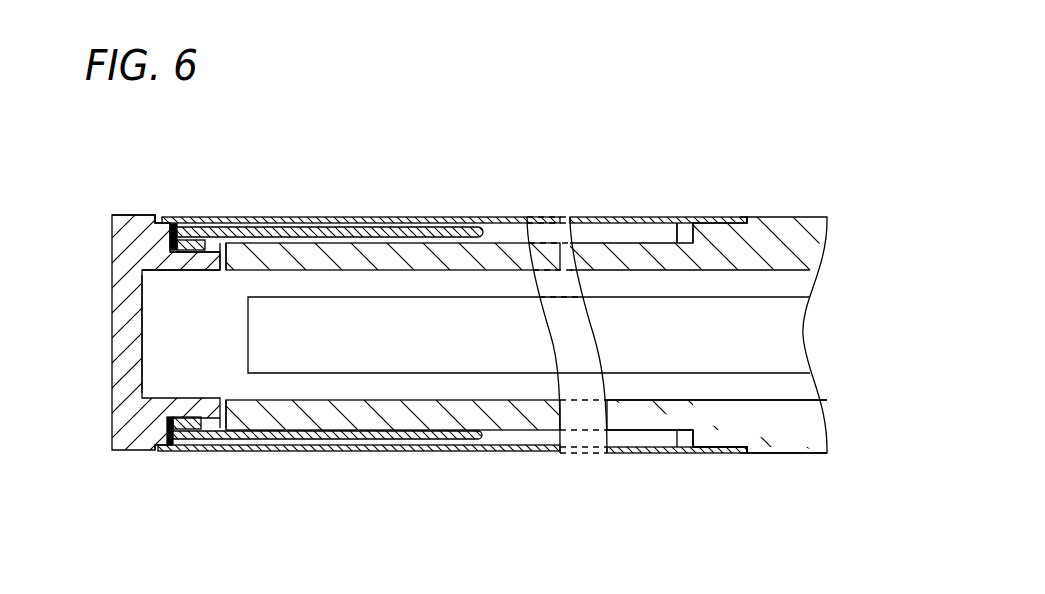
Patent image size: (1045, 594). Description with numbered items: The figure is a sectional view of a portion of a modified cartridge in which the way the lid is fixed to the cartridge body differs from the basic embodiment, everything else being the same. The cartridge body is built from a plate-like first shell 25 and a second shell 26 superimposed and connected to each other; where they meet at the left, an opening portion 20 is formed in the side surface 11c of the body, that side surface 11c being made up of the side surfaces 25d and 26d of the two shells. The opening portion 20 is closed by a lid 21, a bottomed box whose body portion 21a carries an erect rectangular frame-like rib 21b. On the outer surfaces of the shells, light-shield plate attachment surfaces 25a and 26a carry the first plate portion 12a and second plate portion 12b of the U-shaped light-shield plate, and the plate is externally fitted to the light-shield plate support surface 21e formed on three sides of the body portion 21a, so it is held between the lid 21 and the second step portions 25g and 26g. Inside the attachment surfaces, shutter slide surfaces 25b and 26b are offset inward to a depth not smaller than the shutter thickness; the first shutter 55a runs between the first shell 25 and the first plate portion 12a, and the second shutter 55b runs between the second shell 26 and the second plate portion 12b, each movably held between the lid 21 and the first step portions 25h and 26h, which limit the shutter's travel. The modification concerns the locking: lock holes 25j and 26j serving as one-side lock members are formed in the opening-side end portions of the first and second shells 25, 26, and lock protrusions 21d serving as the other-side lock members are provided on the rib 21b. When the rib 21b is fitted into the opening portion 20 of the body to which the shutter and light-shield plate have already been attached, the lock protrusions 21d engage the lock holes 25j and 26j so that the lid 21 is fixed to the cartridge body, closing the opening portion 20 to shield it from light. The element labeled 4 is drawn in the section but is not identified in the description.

The optical unit 4 is at (290, 357).
The side surface 11c is at (150, 220).
The first plate portion 12a is at (302, 218).
The second plate portion 12b is at (335, 452).
The opening portion 20 is at (223, 330).
The lid 21 is at (128, 302).
The body portion 21a is at (113, 342).
The rib 21b is at (195, 262).
The lock protrusion 21d is at (222, 245).
The light-shield plate support surface 21e is at (162, 216).
The first shell 25 is at (458, 245).
The light-shield plate attachment surface 25a is at (720, 218).
The shutter slide surface 25b is at (522, 217).
The side surface 25d is at (168, 236).
The second step portion 25g is at (738, 218).
The first step portion 25h is at (688, 232).
The lock hole 25j is at (205, 240).
The second shell 26 is at (498, 410).
The light-shield plate attachment surface 26a is at (705, 453).
The shutter slide surface 26b is at (612, 453).
The side surface 26d is at (160, 416).
The second step portion 26g is at (735, 453).
The first step portion 26h is at (680, 440).
The lock hole 26j is at (212, 445).
The first shutter 55a is at (380, 230).
The second shutter 55b is at (380, 440).